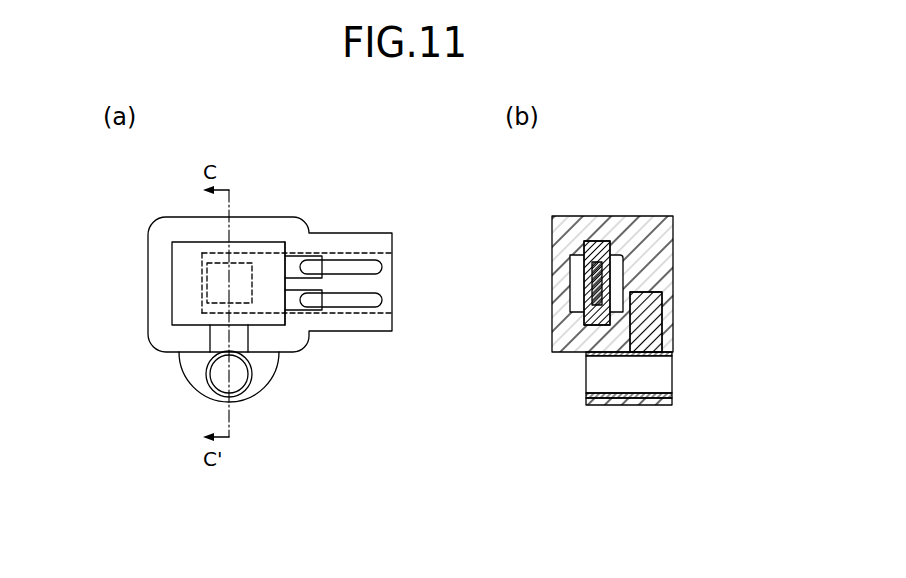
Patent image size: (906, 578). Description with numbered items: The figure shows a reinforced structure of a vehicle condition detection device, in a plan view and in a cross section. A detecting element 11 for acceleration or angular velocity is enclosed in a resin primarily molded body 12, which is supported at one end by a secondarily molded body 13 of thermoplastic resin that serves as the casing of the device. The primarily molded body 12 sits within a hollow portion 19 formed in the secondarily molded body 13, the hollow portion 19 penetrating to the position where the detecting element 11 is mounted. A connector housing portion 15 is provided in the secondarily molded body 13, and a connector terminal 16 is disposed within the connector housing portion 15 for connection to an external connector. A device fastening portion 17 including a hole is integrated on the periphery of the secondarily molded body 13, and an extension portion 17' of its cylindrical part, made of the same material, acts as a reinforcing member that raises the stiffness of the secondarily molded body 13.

The detecting element 11 is at (238, 277).
The primarily molded body 12 is at (185, 257).
The secondarily molded body 13 is at (250, 226).
The connector housing portion 15 is at (375, 327).
The connector terminal 16 is at (352, 267).
The device fastening portion 17 is at (439, 400).
The extension portion 17' is at (416, 347).
The hollow portion 19 is at (617, 262).